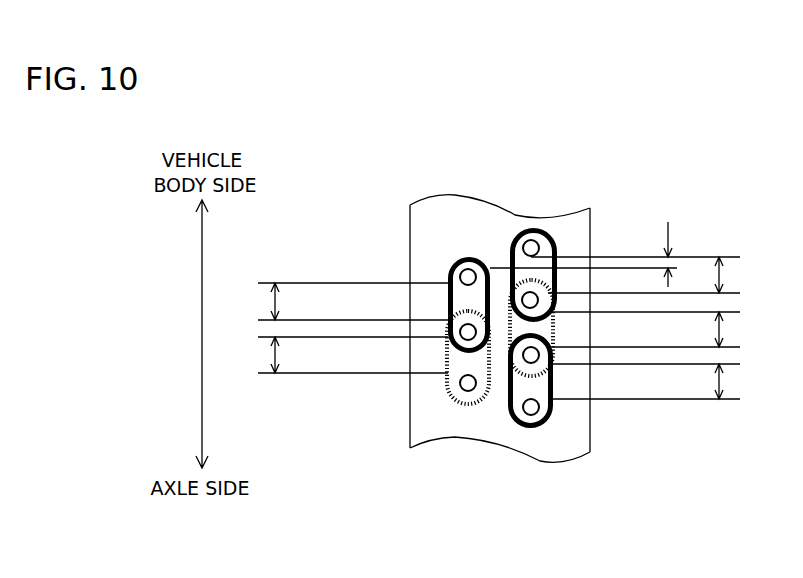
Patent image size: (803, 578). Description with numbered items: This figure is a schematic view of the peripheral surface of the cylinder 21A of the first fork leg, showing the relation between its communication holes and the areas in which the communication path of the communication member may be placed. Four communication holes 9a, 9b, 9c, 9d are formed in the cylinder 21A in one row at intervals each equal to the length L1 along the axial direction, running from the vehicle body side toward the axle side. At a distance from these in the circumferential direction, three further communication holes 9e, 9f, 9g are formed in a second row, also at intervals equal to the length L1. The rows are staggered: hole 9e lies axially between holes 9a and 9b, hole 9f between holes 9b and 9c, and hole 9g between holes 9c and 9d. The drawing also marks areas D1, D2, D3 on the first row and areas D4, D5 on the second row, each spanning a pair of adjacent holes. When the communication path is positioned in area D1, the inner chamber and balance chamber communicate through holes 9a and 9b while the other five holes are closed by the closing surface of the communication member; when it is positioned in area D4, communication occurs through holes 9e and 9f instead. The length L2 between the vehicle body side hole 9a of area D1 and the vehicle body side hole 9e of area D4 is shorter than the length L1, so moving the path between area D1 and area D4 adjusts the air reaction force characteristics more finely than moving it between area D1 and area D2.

The cylinder 21A is at (396, 228).
The area D1 is at (542, 241).
The area D2 is at (557, 328).
The area D3 is at (548, 428).
The area D4 is at (455, 258).
The area D5 is at (458, 402).
The communication hole 9a is at (541, 243).
The communication hole 9b is at (527, 294).
The communication hole 9c is at (538, 363).
The communication hole 9d is at (539, 409).
The communication hole 9e is at (461, 276).
The communication hole 9f is at (462, 326).
The communication hole 9g is at (460, 384).
The length L1 is at (496, 328).
The length L2 is at (593, 254).